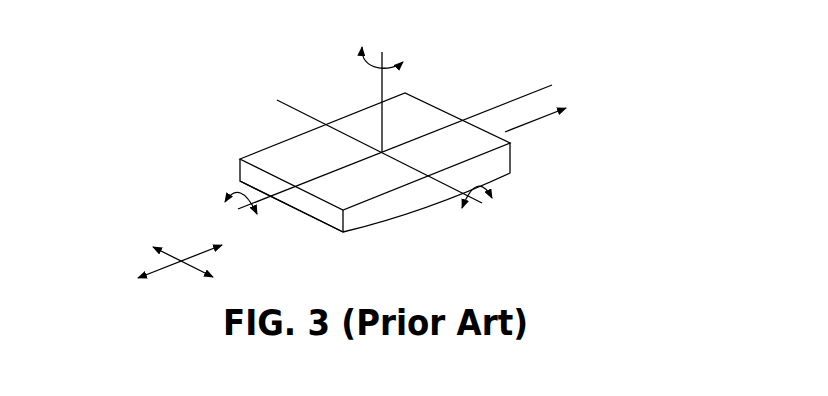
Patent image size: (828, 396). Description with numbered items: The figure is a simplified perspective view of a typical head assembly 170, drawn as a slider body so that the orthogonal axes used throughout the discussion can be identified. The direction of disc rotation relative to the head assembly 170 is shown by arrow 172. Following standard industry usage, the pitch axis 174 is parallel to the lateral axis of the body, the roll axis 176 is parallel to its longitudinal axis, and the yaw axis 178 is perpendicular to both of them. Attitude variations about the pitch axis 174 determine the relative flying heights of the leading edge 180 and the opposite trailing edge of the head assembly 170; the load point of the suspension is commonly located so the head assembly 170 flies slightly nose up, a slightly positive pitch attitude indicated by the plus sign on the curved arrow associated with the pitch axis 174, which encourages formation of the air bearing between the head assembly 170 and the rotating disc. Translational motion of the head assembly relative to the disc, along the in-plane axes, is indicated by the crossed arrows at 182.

The head assembly 170 is at (441, 71).
The arrow 172 is at (540, 120).
The pitch axis 174 is at (300, 112).
The roll axis 176 is at (537, 92).
The yaw axis 178 is at (382, 82).
The leading edge 180 is at (303, 200).
The arrows 182 is at (147, 224).